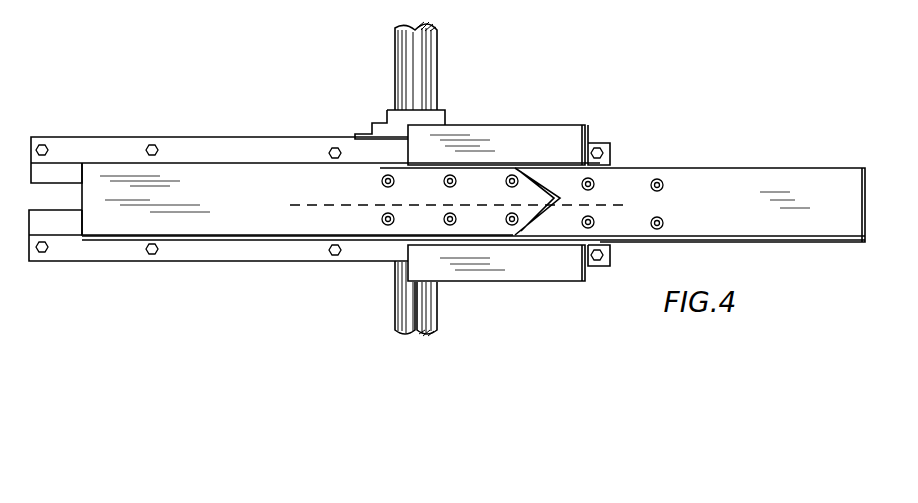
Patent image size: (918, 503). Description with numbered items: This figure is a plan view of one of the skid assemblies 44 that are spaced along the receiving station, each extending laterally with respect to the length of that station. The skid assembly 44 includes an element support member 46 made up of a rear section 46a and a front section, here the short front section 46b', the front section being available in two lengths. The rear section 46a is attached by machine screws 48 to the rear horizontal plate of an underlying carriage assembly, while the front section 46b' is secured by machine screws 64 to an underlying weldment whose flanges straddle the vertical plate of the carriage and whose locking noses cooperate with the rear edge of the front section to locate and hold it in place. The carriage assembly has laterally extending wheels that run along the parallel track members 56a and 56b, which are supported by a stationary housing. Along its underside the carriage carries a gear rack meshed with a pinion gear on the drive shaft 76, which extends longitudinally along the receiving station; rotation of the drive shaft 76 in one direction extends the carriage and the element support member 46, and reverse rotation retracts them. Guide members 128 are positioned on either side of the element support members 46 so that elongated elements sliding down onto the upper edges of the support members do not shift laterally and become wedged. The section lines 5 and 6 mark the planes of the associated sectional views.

The skid assembly 44 is at (533, 110).
The element support member 46 is at (310, 235).
The rear section 46a is at (728, 182).
The short front section 46b' is at (473, 170).
The machine screws 48 is at (657, 178).
The track member 56a is at (62, 223).
The track member 56b is at (65, 170).
The machine screws 64 is at (445, 216).
The drive shaft 76 is at (428, 57).
The guide members 128 is at (482, 132).
The section line 5- 5 is at (277, 176).
The section line 6- 6 is at (592, 125).